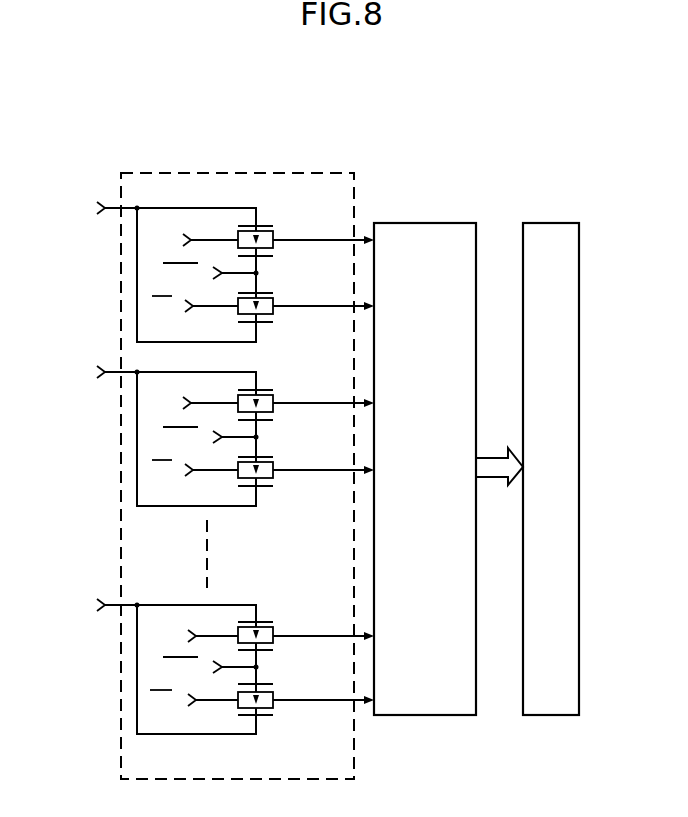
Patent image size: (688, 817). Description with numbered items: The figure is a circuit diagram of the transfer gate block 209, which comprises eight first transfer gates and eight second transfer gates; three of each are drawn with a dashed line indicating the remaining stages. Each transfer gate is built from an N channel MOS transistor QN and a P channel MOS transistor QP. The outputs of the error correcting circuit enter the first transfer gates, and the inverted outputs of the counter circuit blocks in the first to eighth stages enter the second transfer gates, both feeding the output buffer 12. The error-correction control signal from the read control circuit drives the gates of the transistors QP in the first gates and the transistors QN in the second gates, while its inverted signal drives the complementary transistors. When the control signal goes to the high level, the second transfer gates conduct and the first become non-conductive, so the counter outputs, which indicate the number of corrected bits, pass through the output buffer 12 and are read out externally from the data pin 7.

The transfer gate block 209 is at (313, 173).
The output buffer 12 is at (440, 223).
The data pin 7 is at (552, 223).